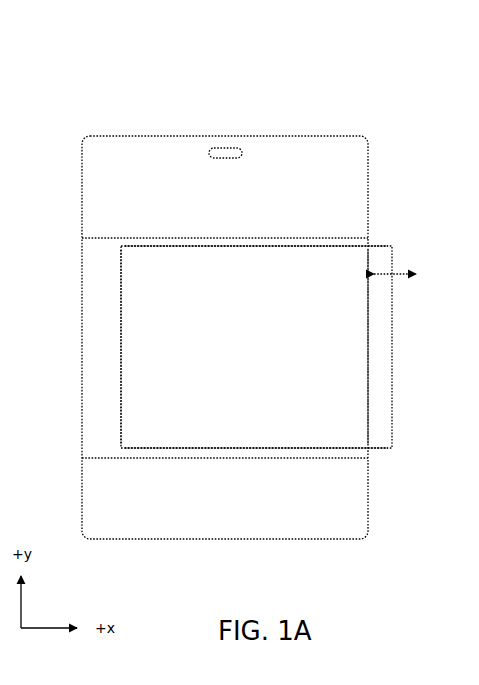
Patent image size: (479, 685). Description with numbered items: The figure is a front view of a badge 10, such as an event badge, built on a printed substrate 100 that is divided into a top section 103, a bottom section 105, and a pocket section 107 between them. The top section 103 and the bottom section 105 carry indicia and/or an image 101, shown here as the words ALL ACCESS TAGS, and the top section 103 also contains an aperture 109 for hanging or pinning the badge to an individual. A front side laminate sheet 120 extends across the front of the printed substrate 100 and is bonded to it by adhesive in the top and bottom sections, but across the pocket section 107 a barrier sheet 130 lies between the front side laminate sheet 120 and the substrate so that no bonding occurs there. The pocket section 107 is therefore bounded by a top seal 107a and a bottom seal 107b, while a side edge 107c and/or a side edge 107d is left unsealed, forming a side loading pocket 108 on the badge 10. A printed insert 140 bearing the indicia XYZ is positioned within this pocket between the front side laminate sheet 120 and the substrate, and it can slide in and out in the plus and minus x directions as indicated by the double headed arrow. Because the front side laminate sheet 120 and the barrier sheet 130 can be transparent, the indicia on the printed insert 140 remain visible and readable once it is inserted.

The badge 10 is at (244, 72).
The printed substrate 100 is at (84, 131).
The indicia and/or image 101 is at (193, 176).
The top section 103 is at (70, 140).
The bottom section 105 is at (72, 463).
The pocket section 107 is at (70, 241).
The top seal 107a is at (220, 238).
The bottom seal 107b is at (153, 458).
The side edge 107c is at (83, 341).
The side edge 107d is at (368, 338).
The side loading pocket 108 is at (379, 459).
The aperture 109 is at (223, 148).
The front side laminate sheet 120 is at (151, 339).
The barrier sheet 130 is at (237, 349).
The printed insert 140 is at (380, 240).